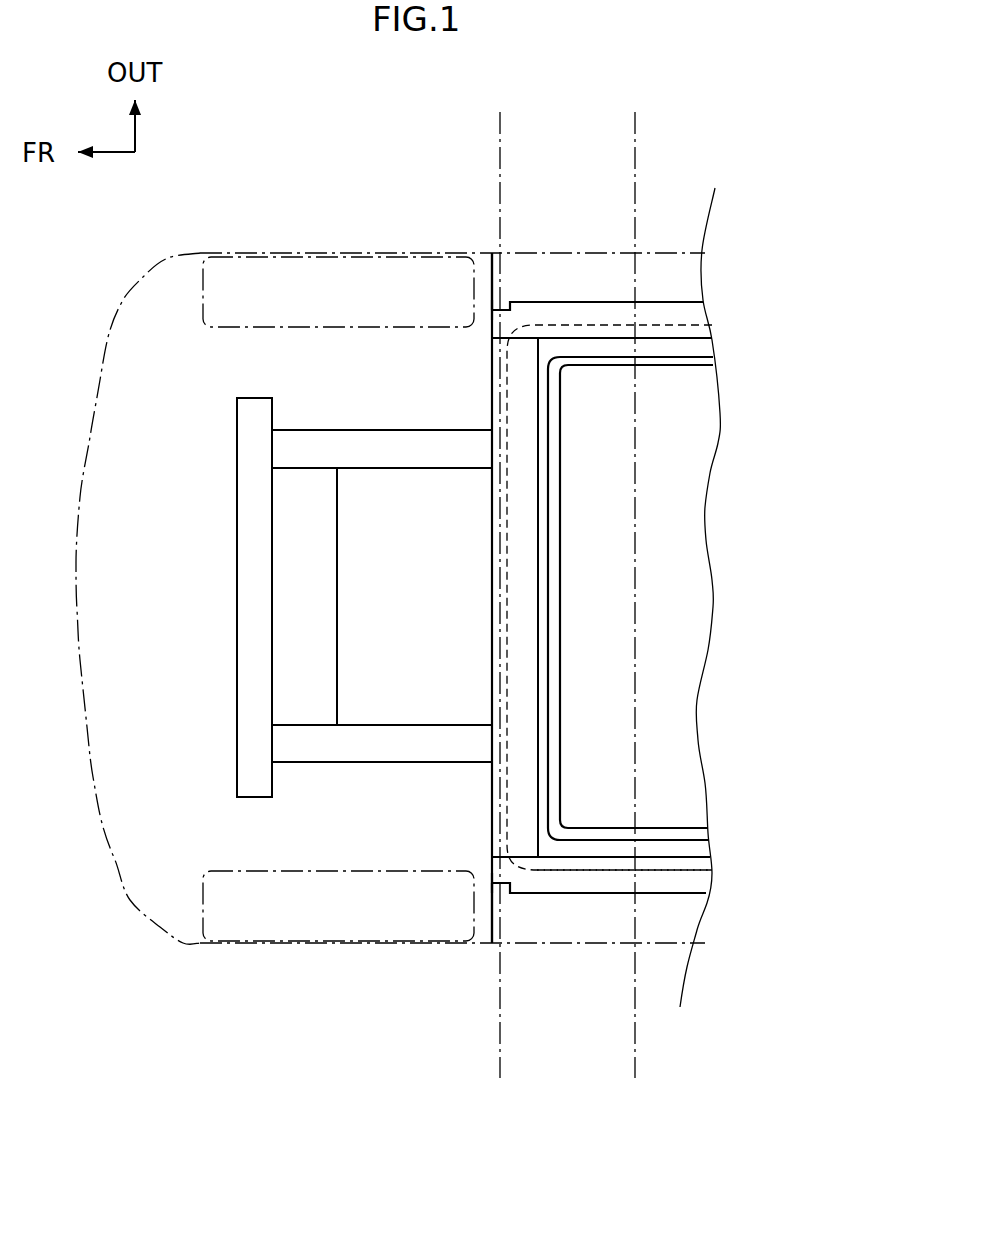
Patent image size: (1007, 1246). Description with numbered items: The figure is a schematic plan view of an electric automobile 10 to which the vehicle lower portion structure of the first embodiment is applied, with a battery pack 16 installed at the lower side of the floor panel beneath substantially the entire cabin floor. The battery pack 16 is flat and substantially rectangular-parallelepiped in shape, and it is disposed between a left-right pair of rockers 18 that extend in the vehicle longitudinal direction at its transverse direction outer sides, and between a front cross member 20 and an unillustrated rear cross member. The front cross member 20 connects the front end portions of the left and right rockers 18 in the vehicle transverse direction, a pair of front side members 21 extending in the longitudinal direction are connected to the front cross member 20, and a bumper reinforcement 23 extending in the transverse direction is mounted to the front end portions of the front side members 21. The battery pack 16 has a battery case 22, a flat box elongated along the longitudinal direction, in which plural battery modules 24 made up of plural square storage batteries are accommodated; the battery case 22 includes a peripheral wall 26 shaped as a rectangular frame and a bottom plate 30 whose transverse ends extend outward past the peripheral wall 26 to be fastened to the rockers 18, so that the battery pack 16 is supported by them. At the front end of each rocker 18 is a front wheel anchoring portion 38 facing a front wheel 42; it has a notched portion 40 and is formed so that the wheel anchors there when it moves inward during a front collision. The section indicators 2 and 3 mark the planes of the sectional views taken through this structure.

The electric automobile 10 is at (337, 197).
The battery pack 16 is at (729, 467).
The rocker 18 is at (691, 299).
The front cross member 20 is at (492, 390).
The front side member 21 is at (362, 430).
The battery case 22 is at (570, 321).
The bumper reinforcement 23 is at (237, 596).
The battery module 24 is at (690, 578).
The peripheral wall 26 is at (634, 350).
The bottom plate 30 is at (566, 872).
The front wheel anchoring portion 38 is at (489, 283).
The notched portion 40 is at (489, 306).
The front wheel 42 is at (203, 292).
The section line 2 is at (633, 120).
The section line 3 is at (498, 120).